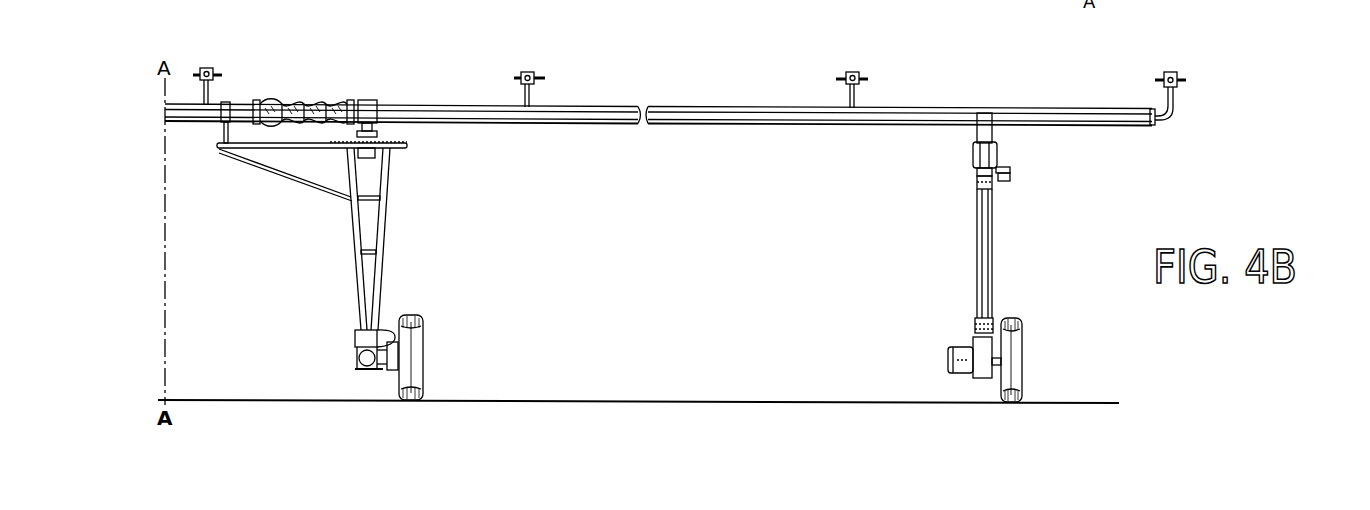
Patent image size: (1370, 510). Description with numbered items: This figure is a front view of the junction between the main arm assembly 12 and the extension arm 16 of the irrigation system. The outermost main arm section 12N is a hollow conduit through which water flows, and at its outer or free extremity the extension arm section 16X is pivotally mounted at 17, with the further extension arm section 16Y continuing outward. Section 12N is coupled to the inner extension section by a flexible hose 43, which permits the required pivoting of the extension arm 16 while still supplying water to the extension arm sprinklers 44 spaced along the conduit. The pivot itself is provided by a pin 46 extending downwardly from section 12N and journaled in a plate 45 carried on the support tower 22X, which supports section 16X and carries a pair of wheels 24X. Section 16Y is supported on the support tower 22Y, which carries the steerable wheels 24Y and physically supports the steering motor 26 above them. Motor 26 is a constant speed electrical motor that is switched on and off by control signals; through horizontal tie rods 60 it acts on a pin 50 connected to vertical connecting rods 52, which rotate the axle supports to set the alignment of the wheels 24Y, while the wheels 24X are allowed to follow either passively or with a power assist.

The main arm assembly 12 is at (227, 40).
The main arm section 12N is at (232, 103).
The extension arm 16 is at (660, 107).
The extension arm section 16X is at (467, 113).
The extension arm section 16Y is at (1097, 114).
The pivot mounting 17 is at (274, 134).
The support tower 22X is at (377, 258).
The support tower 22Y is at (985, 253).
The wheels 24X is at (410, 355).
The wheels 24Y is at (1012, 357).
The steering motor 26 is at (973, 158).
The flexible hose 43 is at (313, 101).
The sprinklers 44 is at (527, 70).
The plate 45 is at (312, 150).
The pin 46 is at (222, 130).
The pin 50 is at (996, 182).
The vertical connecting rods 52 is at (982, 222).
The horizontal tie rods 60 is at (1012, 170).